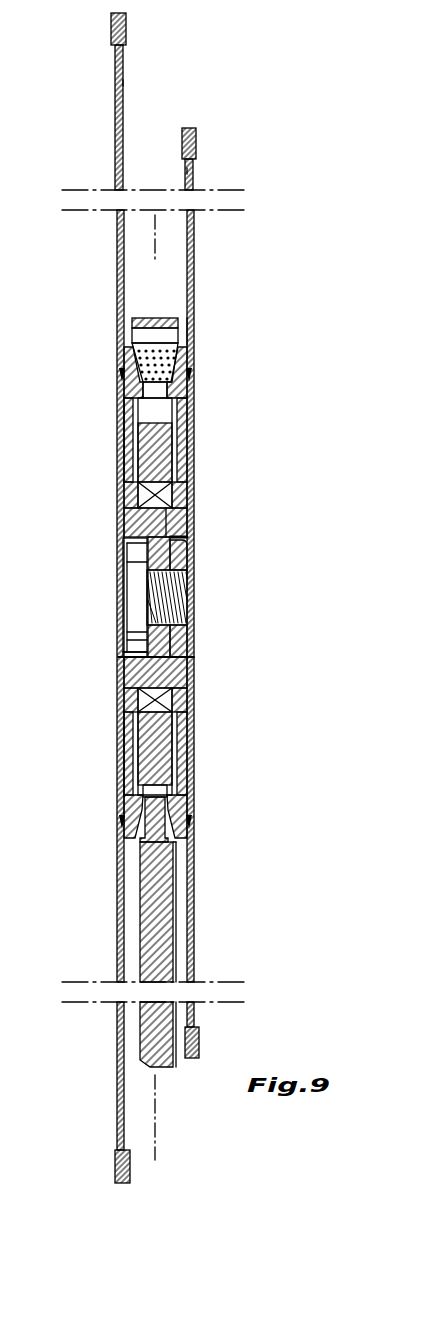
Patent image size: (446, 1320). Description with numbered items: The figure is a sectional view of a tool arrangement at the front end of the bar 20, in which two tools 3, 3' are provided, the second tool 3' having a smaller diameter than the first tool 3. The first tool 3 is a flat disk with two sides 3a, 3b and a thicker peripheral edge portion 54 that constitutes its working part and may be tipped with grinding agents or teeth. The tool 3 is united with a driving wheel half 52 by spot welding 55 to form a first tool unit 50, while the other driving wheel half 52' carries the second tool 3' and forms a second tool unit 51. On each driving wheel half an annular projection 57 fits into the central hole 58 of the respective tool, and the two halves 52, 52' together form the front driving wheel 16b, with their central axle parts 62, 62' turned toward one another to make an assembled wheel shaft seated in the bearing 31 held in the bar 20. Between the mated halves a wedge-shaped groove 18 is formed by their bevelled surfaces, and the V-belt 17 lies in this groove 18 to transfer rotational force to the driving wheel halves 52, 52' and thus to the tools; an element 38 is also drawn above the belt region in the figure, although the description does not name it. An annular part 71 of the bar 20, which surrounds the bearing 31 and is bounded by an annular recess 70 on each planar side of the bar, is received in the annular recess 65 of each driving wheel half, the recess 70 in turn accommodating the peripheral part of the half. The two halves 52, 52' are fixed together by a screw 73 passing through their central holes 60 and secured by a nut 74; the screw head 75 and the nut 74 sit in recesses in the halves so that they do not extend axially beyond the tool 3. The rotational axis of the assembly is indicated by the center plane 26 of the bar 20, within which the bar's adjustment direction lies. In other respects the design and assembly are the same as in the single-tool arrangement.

The tool 3 is at (92, 117).
The side of the tool 3a is at (123, 80).
The side of the tool 3b is at (118, 88).
The second tool 3' is at (182, 680).
The peripheral edge portion 54 is at (112, 30).
The plug 38 is at (150, 318).
The front driving wheel 16b is at (187, 333).
The V-belt 17 is at (168, 358).
The spot welding 55 is at (120, 378).
The wedge-shaped groove 18 is at (170, 398).
The annular recess 65 is at (133, 430).
The annular part 71 is at (160, 452).
The driving wheel half 52 is at (92, 440).
The driving wheel half 52' is at (214, 440).
The central axle part 62 is at (123, 513).
The bearing 31 is at (160, 495).
The annular projection 57 is at (135, 527).
The screw 73 is at (160, 592).
The central hole 60 is at (172, 592).
The screw head 75 is at (124, 618).
The nut 74 is at (182, 642).
The central hole 58 is at (130, 655).
The axle part 62' is at (187, 726).
The tool unit 50 is at (116, 742).
The tool unit 51 is at (196, 738).
The annular recess 70 is at (182, 845).
The bar 20 is at (160, 922).
The center plane 26 is at (157, 1148).